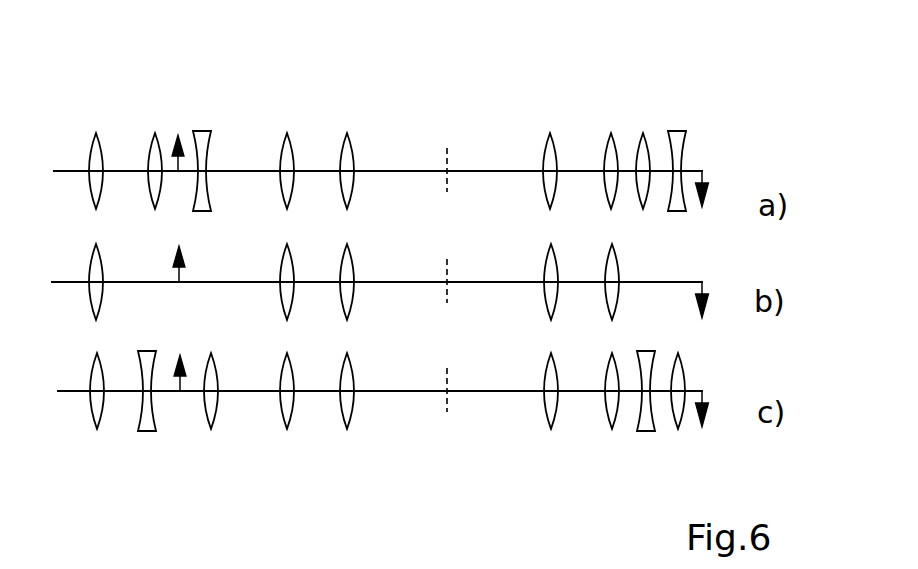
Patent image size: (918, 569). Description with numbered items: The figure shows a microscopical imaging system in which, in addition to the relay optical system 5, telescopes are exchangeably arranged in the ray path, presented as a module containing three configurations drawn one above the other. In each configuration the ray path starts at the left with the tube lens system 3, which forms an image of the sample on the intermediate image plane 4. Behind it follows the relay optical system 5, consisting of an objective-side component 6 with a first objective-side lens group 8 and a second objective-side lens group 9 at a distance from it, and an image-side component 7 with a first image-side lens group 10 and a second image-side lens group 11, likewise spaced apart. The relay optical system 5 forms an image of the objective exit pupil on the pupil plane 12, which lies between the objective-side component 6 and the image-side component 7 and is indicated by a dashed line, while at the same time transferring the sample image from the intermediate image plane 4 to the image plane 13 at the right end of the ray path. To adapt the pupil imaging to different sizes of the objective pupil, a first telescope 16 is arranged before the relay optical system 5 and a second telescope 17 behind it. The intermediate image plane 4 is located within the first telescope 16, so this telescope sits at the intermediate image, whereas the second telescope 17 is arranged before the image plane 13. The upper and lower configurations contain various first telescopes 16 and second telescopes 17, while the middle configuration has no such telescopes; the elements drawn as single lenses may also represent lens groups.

The tube lens system 3 is at (105, 456).
The intermediate image plane 4 is at (174, 135).
The relay optical system 5 is at (275, 456).
The objective-side component 6 is at (314, 111).
The image-side component 7 is at (588, 111).
The first objective-side lens group 8 is at (289, 135).
The second objective-side lens group 9 is at (347, 138).
The first image-side lens group 10 is at (551, 135).
The second image-side lens group 11 is at (621, 138).
The pupil plane 12 is at (447, 148).
The image plane 13 is at (704, 178).
The first telescope 16 is at (220, 456).
The second telescope 17 is at (633, 456).